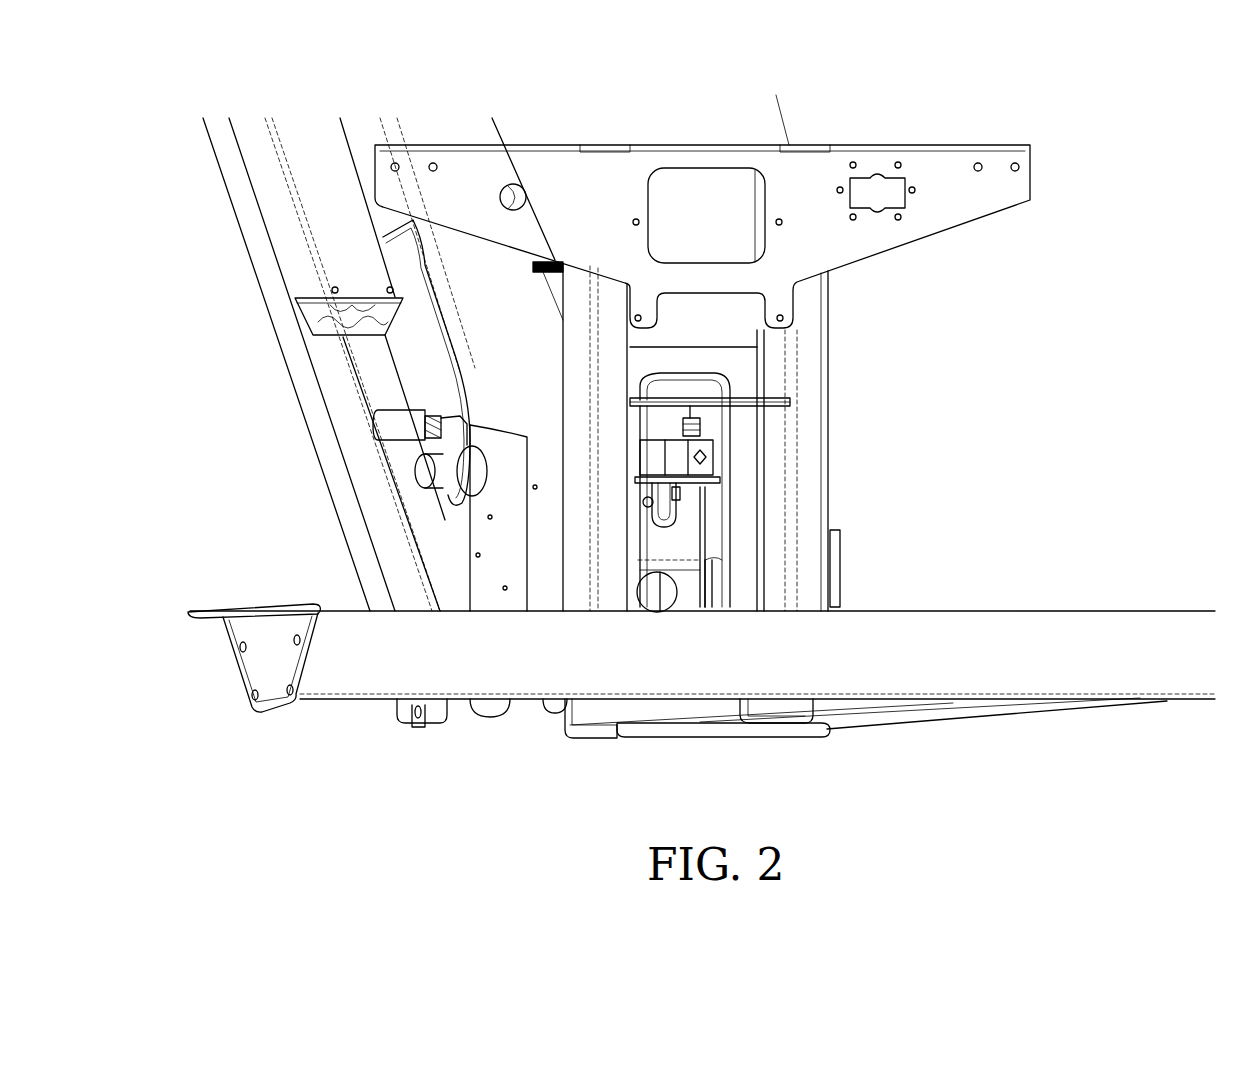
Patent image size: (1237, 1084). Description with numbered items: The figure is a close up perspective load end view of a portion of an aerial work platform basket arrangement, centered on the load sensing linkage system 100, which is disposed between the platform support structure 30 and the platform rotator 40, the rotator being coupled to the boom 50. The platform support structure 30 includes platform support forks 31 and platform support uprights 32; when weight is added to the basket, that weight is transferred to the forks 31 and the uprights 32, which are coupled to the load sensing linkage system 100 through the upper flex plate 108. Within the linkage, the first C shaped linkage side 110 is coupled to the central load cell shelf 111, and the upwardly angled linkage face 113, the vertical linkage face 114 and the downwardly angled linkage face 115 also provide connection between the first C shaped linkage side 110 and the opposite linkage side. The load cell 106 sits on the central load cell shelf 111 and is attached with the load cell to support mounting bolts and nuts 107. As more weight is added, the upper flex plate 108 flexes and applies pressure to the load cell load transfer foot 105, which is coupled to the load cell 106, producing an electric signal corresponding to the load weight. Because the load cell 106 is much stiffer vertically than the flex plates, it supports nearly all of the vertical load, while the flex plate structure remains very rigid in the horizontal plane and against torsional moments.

The load sensing linkage system 100 is at (1103, 363).
The boom 50 is at (512, 296).
The platform support uprights 32 is at (597, 347).
The platform rotator 40 is at (463, 543).
The central load cell shelf 111 is at (635, 480).
The downwardly angled linkage face 115 is at (688, 395).
The upper flex plate 108 is at (757, 395).
The load cell load transfer foot 105 is at (700, 432).
The load cell 106 is at (713, 465).
The load cell to support mounting bolts and nuts 107 is at (682, 492).
The first C shaped linkage side 110 is at (730, 575).
The vertical linkage face 114 is at (688, 554).
The upwardly angled linkage face 113 is at (683, 590).
The platform support structure 30 is at (347, 706).
The platform support forks 31 is at (697, 722).